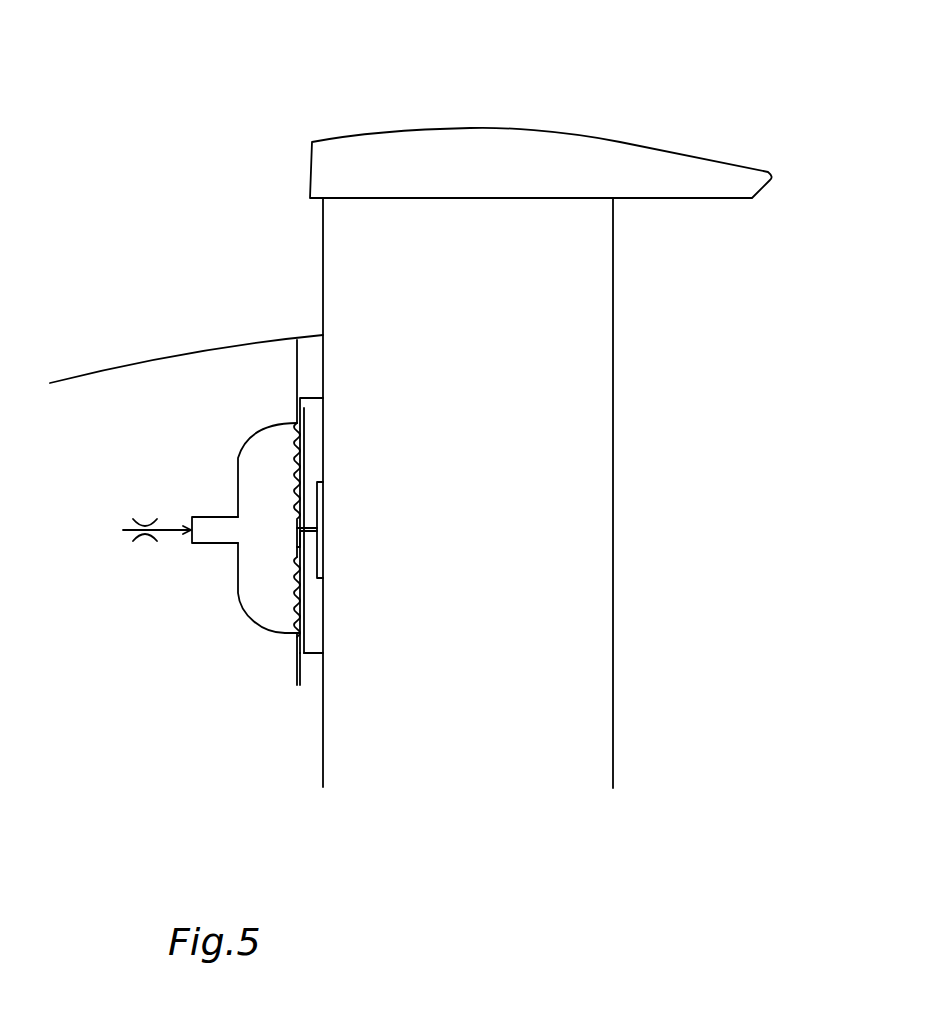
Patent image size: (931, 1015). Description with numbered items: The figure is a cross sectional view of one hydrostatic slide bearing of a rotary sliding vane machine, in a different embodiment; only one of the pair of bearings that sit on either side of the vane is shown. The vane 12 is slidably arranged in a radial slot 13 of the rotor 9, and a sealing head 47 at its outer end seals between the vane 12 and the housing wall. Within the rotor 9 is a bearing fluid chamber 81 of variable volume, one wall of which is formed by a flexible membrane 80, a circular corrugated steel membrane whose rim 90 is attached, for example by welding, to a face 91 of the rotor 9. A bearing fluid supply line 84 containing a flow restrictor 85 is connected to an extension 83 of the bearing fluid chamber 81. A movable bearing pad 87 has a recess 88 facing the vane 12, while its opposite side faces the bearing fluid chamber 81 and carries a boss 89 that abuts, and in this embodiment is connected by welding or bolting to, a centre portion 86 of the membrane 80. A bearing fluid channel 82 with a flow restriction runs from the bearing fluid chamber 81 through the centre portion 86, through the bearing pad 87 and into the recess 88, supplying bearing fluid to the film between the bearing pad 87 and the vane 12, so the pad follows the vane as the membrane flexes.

The sealing head 47 is at (510, 150).
The vane 12 is at (582, 402).
The rotor 9 is at (240, 405).
The radial slot 13 is at (307, 362).
The bearing pad 87 is at (318, 442).
The rim 90 is at (296, 638).
The face 91 is at (296, 668).
The recess 88 is at (319, 527).
The boss 89 is at (290, 521).
The bearing fluid channel 82 is at (318, 535).
The flexible membrane 80 is at (238, 458).
The bearing fluid chamber 81 is at (255, 483).
The centre portion 86 is at (298, 535).
The extension 83 is at (207, 543).
The bearing fluid supply line 84 is at (167, 533).
The flow restrictor 85 is at (136, 527).